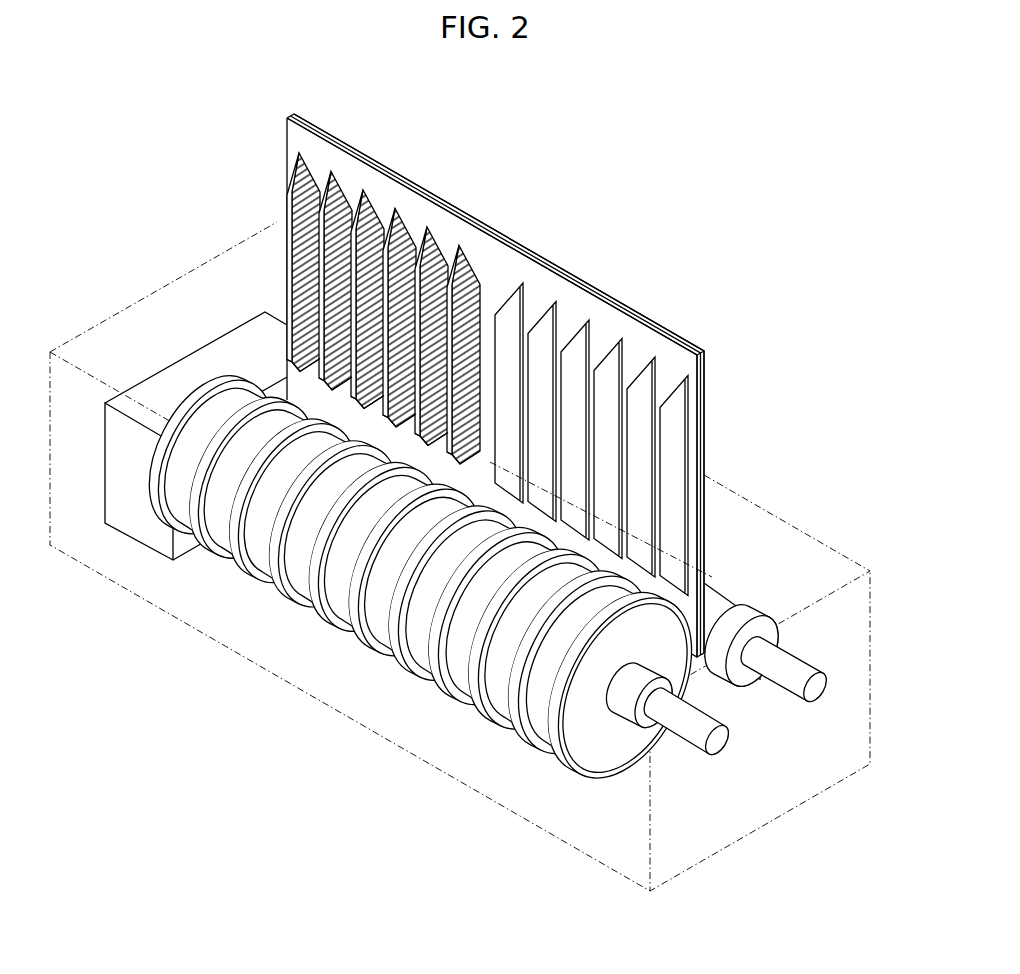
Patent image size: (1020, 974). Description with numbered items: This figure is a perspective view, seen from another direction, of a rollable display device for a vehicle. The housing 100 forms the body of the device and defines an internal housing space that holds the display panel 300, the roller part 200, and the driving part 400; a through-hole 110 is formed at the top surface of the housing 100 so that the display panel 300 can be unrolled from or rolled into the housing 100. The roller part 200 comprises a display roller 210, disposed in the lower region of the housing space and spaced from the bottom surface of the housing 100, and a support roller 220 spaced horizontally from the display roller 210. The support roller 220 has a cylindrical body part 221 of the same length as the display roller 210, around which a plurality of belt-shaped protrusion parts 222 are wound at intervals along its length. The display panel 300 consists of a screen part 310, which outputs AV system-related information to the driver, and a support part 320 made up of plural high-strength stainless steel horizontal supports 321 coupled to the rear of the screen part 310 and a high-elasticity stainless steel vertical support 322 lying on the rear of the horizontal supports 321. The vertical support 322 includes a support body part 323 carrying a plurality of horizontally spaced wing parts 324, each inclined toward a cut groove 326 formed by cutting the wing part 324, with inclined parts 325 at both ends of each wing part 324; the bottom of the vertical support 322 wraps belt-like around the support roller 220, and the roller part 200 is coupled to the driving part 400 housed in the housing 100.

The housing 100 is at (118, 276).
The through-hole 110 is at (462, 540).
The roller part 200 is at (805, 800).
The display roller 210 is at (815, 700).
The support roller 220 is at (720, 752).
The body part 221 is at (480, 730).
The protrusion part 222 is at (535, 745).
The display panel 300 is at (622, 282).
The screen part 310 is at (683, 340).
The support part 320 is at (681, 147).
The horizontal support 321 is at (704, 368).
The vertical support 322 is at (400, 183).
The support body part 323 is at (372, 195).
The wing part 324 is at (528, 330).
The inclined part 325 is at (447, 257).
The cut groove 326 is at (433, 432).
The driving part 400 is at (207, 340).